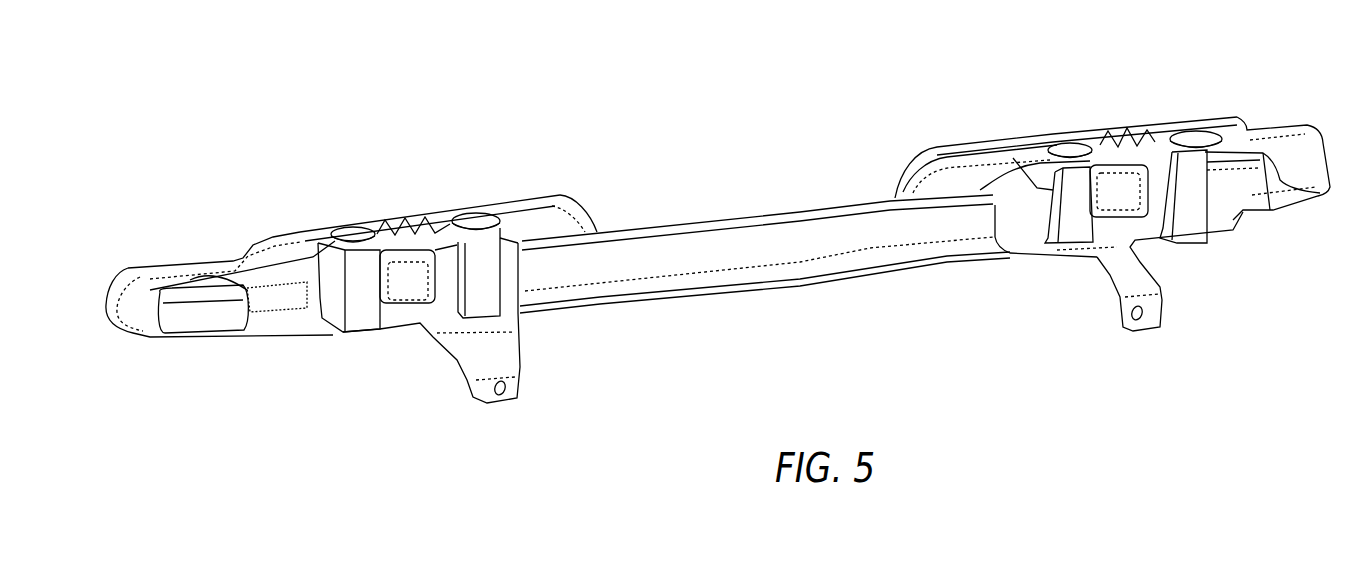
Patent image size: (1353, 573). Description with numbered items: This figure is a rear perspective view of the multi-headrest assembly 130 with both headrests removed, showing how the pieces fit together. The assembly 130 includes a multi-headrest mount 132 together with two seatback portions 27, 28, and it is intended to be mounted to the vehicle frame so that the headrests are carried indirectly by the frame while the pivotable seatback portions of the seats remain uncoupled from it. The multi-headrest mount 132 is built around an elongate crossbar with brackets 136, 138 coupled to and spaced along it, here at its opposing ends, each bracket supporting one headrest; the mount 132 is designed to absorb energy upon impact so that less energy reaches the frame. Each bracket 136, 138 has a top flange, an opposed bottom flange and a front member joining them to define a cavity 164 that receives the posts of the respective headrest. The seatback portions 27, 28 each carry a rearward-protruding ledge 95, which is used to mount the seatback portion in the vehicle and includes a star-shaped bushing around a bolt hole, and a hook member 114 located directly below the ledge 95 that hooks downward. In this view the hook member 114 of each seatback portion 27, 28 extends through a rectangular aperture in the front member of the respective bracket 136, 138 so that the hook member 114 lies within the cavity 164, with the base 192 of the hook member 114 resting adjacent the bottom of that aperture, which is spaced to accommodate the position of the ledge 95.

The multi-headrest assembly 130 is at (245, 112).
The multi-headrest mount 132 is at (740, 214).
The seatback portion 27 is at (1003, 140).
The seatback portion 28 is at (478, 206).
The ledge 95 is at (395, 220).
The base of the hook member 192 is at (1098, 146).
The bracket 136 is at (1234, 222).
The bracket 138 is at (338, 332).
The hook member 114 is at (400, 297).
The cavity 164 is at (445, 272).